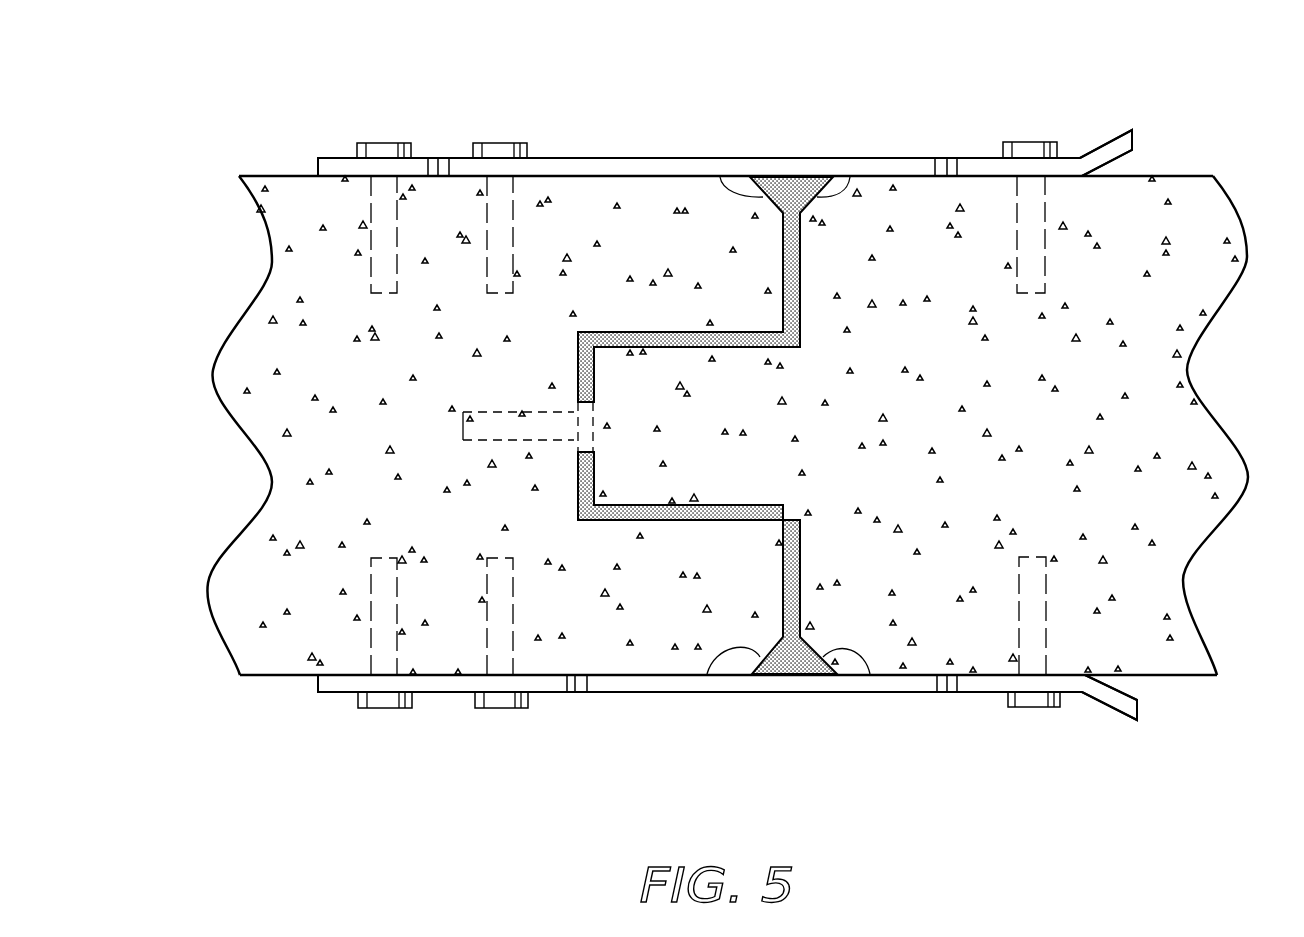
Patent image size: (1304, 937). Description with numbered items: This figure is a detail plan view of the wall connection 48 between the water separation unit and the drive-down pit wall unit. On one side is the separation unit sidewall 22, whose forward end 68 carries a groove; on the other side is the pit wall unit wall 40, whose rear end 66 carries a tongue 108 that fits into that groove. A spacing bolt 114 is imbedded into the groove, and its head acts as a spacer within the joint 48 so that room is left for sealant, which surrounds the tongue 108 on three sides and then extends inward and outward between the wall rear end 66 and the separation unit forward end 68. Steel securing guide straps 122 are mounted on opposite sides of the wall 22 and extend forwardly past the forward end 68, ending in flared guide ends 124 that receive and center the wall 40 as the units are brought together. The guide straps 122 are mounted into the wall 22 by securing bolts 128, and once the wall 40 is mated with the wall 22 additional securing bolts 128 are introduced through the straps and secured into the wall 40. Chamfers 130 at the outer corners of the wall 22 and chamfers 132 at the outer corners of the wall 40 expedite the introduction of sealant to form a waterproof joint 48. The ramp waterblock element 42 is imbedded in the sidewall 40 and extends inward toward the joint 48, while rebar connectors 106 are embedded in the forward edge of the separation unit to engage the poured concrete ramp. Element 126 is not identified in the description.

The separation unit sidewall 22 is at (233, 548).
The sidewall of pit wall unit 40 is at (1217, 278).
The ramp waterblock element 42 is at (578, 486).
The connection joint 48 is at (762, 733).
The rear end of wall 66 is at (800, 245).
The forward end of separation unit sidewall 68 is at (783, 308).
The rebar connectors 106 is at (708, 412).
The tongue 108 is at (595, 389).
The spacing bolt 114 is at (462, 432).
The securing guide strap 122 is at (653, 157).
The flared guide end 124 is at (1135, 140).
The plate end 126 is at (328, 158).
The securing bolt 128 is at (380, 140).
The chamfer 130 is at (720, 177).
The chamfer 132 is at (850, 177).